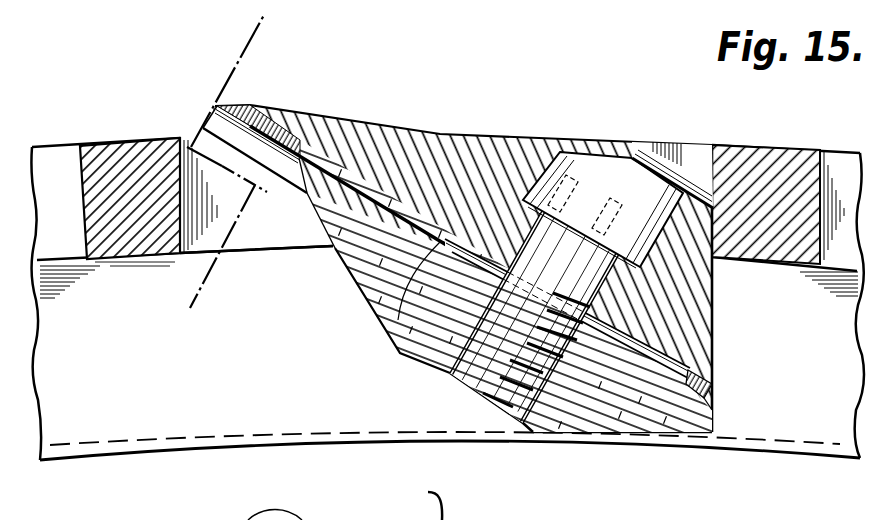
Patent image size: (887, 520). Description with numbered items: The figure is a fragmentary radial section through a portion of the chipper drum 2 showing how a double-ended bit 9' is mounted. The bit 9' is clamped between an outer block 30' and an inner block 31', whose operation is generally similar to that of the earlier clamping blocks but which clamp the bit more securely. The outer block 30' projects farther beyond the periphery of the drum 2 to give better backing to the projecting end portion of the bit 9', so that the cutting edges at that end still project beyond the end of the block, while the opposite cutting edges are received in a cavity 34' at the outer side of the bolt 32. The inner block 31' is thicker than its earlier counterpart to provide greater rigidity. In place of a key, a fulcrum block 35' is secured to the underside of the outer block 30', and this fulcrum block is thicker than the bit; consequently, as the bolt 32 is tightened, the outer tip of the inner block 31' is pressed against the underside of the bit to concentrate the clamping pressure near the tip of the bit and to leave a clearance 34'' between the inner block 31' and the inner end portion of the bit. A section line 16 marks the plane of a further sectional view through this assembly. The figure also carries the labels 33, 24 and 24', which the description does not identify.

The chipper drum 2 is at (134, 150).
The section line 16- 16 is at (248, 20).
The bit 9' is at (328, 158).
The outer block 30' is at (457, 256).
The bolt 32 is at (563, 165).
The clamping wedge 33 is at (632, 335).
The rim 24 is at (447, 309).
The rim surface 24' is at (256, 260).
The inner block 31' is at (506, 286).
The cavity 34' is at (567, 359).
The clearance 34'' is at (434, 337).
The fulcrum block 35' is at (683, 426).